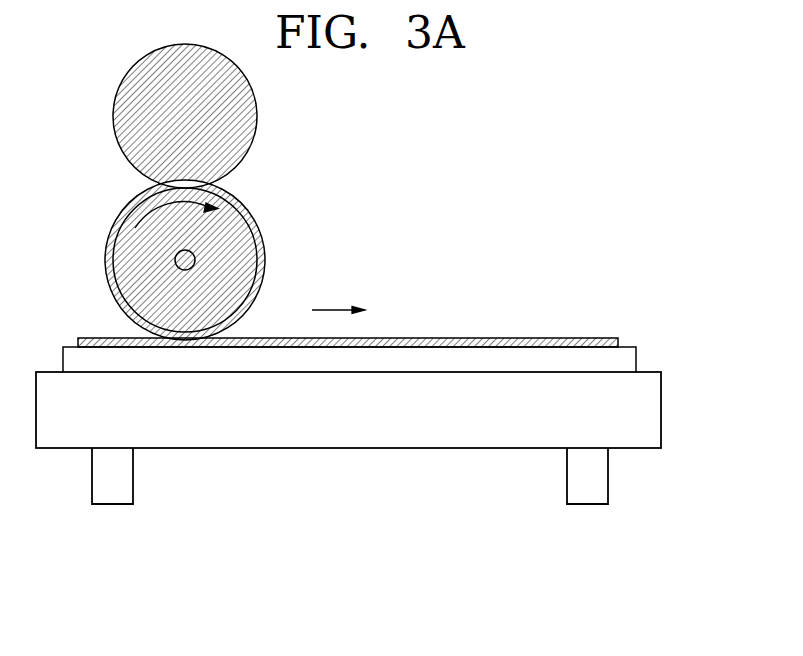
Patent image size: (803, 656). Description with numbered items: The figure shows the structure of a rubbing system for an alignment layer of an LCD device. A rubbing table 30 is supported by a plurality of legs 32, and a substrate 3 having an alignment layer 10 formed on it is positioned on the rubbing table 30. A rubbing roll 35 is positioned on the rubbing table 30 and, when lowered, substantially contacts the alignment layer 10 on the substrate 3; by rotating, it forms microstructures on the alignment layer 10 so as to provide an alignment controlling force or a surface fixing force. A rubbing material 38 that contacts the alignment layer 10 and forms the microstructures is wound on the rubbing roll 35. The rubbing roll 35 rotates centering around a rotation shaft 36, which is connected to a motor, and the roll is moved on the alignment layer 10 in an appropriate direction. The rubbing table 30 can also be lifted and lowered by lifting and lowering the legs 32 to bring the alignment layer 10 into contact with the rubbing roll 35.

The substrate 3 is at (585, 358).
The alignment layer 10 is at (471, 340).
The rubbing table 30 is at (651, 410).
The legs 32 is at (600, 480).
The rubbing roll 35 is at (233, 225).
The rotation shaft 36 is at (195, 259).
The rubbing material 38 is at (218, 192).